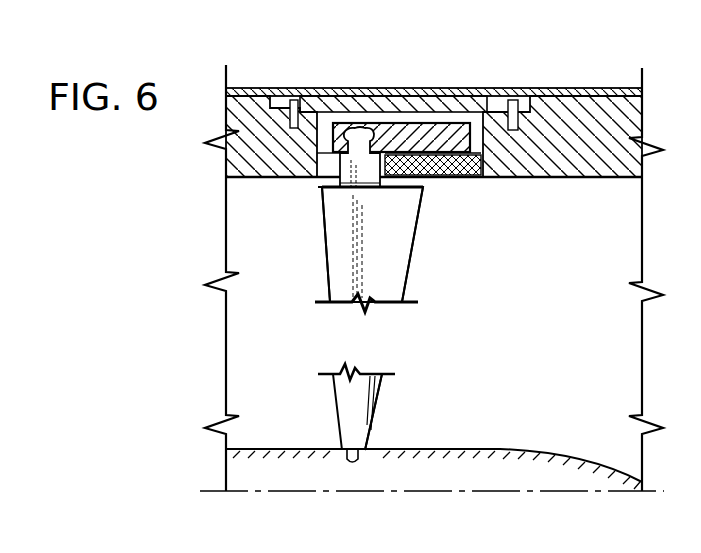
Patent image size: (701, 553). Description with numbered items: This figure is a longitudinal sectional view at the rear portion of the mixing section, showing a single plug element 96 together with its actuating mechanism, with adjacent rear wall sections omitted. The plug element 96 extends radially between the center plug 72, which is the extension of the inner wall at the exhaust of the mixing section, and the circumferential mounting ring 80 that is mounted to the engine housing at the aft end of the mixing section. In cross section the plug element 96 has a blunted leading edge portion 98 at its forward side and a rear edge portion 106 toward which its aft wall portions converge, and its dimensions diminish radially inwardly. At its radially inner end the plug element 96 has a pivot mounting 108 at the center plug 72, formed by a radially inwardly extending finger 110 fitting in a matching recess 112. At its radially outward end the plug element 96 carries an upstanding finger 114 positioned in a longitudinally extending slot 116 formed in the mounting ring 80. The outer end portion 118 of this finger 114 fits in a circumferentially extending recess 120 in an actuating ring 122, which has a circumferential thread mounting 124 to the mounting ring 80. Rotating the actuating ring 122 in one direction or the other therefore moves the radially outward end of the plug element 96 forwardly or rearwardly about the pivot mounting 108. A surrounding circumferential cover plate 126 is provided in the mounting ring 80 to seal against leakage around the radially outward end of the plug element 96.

The plug 72 is at (498, 448).
The circumferential mounting ring 80 is at (553, 117).
The plug element 96 is at (404, 220).
The blunted leading edge portion 98 is at (324, 242).
The rear edge portion 106 is at (410, 250).
The pivot mounting 108 is at (376, 444).
The radially inwardly extending finger 110 is at (349, 460).
The matching recess 112 is at (368, 458).
The upstanding finger 114 is at (357, 188).
The longitudinally extending slot 116 is at (322, 188).
The outer end portion 118 is at (358, 128).
The circumferentially extending recess 120 is at (340, 150).
The actuating ring 122 is at (400, 126).
The circumferential thread mounting 124 is at (452, 183).
The circumferential cover plate 126 is at (463, 100).